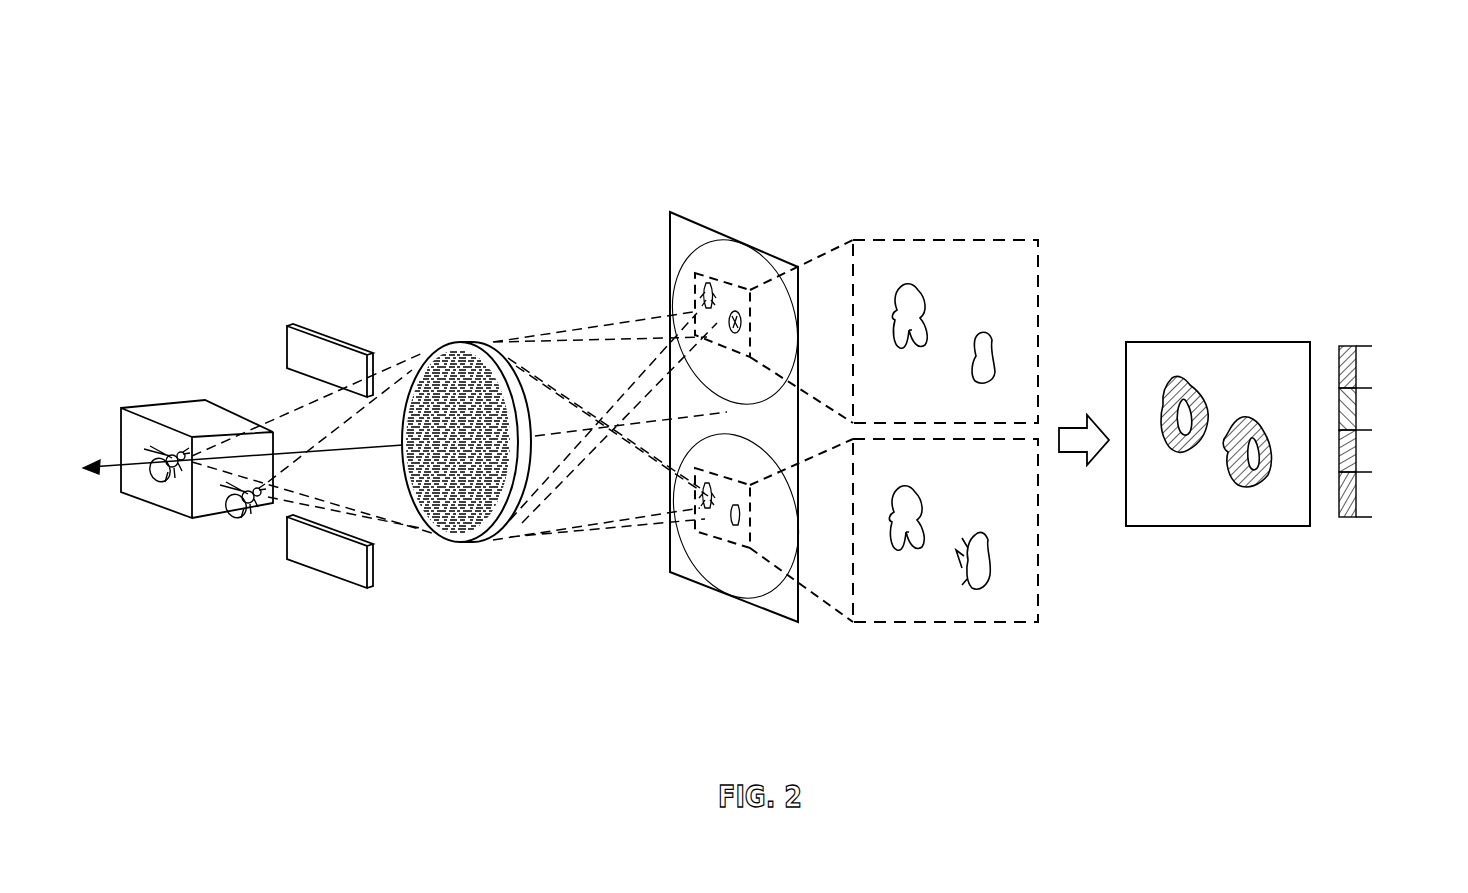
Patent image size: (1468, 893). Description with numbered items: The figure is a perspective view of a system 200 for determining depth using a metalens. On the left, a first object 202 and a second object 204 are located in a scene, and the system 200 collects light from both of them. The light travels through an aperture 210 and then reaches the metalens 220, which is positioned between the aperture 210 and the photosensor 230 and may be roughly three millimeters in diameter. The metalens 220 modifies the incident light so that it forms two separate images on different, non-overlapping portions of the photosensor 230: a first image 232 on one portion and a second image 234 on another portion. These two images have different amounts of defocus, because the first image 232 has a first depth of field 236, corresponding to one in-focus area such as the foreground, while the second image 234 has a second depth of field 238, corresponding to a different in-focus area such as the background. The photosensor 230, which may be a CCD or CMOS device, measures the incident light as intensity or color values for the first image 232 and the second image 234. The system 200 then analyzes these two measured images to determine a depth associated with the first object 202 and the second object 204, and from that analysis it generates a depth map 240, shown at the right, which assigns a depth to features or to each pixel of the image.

The system 200 is at (200, 128).
The first object 202 is at (155, 477).
The second object 204 is at (240, 510).
The aperture 210 is at (323, 572).
The metalens 220 is at (463, 545).
The photosensor 230 is at (783, 607).
The first image 232 is at (720, 540).
The second image 234 is at (728, 282).
The first depth of field 236 is at (710, 500).
The second depth of field 238 is at (730, 315).
The depth map 240 is at (1272, 362).